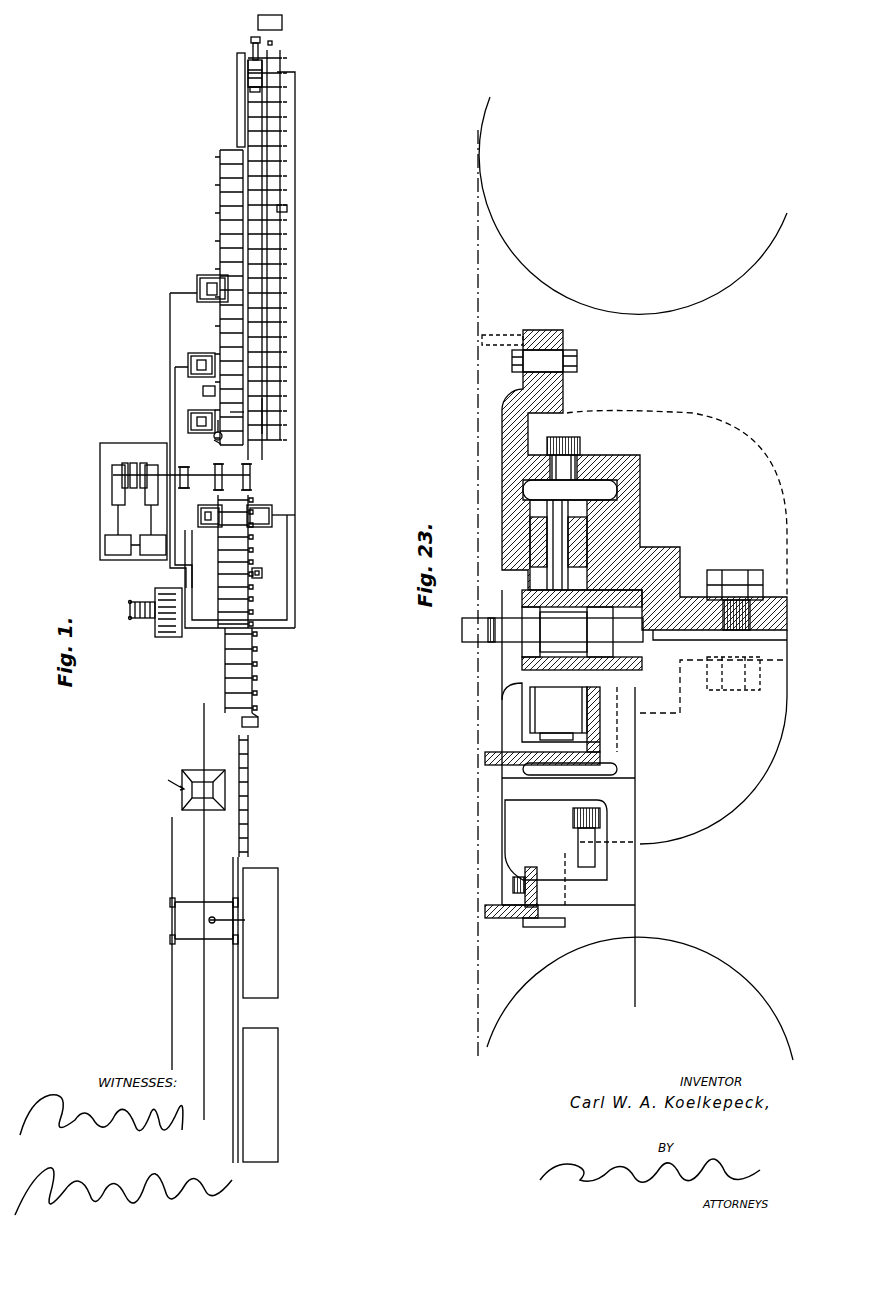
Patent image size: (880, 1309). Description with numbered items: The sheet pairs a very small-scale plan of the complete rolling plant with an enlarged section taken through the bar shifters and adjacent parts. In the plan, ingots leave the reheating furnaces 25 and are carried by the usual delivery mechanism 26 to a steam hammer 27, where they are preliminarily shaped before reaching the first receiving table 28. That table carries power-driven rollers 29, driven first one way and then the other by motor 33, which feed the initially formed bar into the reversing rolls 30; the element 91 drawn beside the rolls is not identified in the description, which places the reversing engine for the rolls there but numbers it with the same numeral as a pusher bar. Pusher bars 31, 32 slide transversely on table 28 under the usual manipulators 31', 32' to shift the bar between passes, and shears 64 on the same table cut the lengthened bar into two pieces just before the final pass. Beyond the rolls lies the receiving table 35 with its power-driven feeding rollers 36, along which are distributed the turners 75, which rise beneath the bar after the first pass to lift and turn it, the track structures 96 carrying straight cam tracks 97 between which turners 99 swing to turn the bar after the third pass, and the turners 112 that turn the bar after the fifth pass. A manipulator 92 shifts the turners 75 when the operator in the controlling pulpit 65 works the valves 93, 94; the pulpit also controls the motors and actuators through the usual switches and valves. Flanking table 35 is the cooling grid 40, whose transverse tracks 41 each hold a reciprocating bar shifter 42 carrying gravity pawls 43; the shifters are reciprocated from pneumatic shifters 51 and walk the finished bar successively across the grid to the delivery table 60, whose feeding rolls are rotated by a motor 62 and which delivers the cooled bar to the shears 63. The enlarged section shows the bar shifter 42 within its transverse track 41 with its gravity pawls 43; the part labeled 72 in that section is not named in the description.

In FIG. 1, the shears 63 is at (282, 25).
In FIG. 1, the pneumatic shifter 51 is at (249, 50).
In FIG. 1, the motor 62 is at (306, 350).
In FIG. 1, the turners 112 is at (235, 272).
In FIG. 1, the receiving table 35 is at (215, 308).
In FIG. 1, the turner 99 is at (215, 390).
In FIG. 1, the feeding rollers 36 is at (240, 385).
In FIG. 23, the feeding rollers 36 is at (617, 318).
In FIG. 1, the delivery table 60 is at (273, 352).
In FIG. 1, the cooling grid 40 is at (263, 370).
In FIG. 1, the straight cam tracks 97 is at (203, 395).
In FIG. 1, the turners 75 is at (240, 420).
In FIG. 1, the track structures 96 is at (265, 410).
In FIG. 1, the manipulator 92 is at (214, 437).
In FIG. 1, the rolls 30 is at (251, 478).
In FIG. 1, the engine 91 is at (108, 476).
In FIG. 1, the manipulator 31' is at (200, 513).
In FIG. 1, the manipulator 32' is at (285, 520).
In FIG. 1, the pusher bar 31 is at (221, 561).
In FIG. 1, the pusher bar 32 is at (264, 562).
In FIG. 1, the valve 94 is at (160, 610).
In FIG. 1, the valve 93 is at (172, 592).
In FIG. 1, the motor 33 is at (262, 574).
In FIG. 1, the controlling pulpit 65 is at (155, 630).
In FIG. 1, the first receiving table 28 is at (230, 655).
In FIG. 1, the power-driven rollers 29 is at (257, 662).
In FIG. 1, the shears 64 is at (258, 722).
In FIG. 1, the steam hammer 27 is at (203, 786).
In FIG. 1, the delivery mechanism 26 is at (185, 918).
In FIG. 1, the reheating furnaces 25 is at (245, 1033).
In FIG. 23, the bolt 72 is at (505, 530).
In FIG. 23, the bar shifter 42 is at (520, 575).
In FIG. 23, the gravity pawls 43 is at (522, 595).
In FIG. 23, the transverse tracks 41 is at (485, 756).